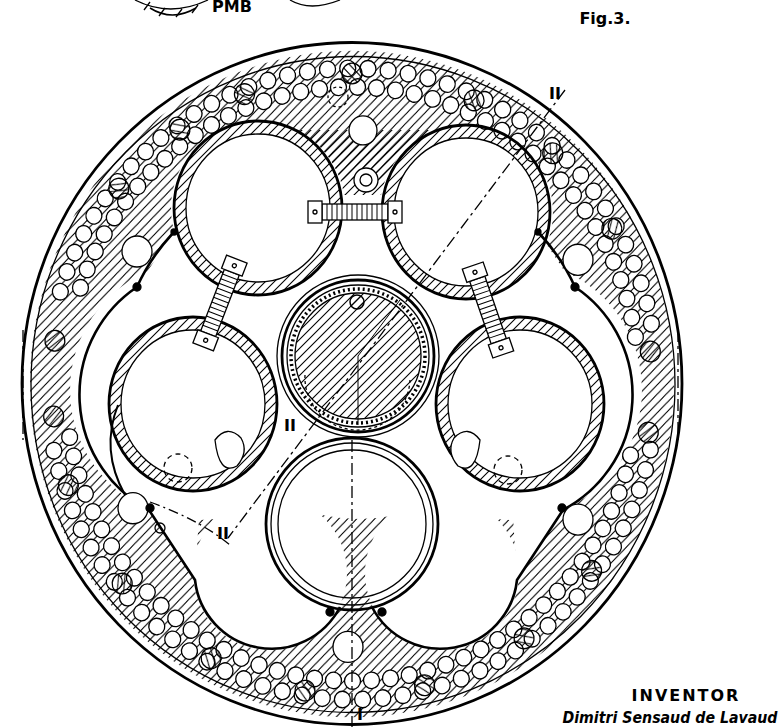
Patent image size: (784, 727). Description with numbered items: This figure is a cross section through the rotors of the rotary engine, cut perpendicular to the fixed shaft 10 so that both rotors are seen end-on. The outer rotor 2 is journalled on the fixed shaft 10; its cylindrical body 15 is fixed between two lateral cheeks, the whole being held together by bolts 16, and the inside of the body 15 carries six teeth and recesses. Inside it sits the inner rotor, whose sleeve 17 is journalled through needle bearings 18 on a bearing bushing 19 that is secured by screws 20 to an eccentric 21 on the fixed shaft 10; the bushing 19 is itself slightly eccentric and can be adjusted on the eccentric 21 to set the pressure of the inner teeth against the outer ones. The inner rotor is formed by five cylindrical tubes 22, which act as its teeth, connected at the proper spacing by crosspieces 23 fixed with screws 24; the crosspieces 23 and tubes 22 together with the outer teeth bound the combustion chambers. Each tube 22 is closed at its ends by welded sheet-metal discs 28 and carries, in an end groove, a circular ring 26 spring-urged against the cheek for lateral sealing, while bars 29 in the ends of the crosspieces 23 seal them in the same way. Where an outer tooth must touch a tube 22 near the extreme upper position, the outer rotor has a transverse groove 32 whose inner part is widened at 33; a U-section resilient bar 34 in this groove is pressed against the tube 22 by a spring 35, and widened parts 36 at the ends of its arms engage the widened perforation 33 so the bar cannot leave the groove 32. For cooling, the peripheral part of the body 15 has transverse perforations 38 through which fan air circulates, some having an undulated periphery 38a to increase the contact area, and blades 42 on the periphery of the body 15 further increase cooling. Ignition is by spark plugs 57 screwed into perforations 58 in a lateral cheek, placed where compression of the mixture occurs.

The outer rotor 2 is at (172, 14).
The fixed shaft 10 is at (452, 390).
The cylindrical body 15 is at (212, 105).
The bolts 16 is at (177, 125).
The sleeve 17 is at (398, 288).
The needle bearings 18 is at (368, 428).
The bearing bushing 19 is at (405, 242).
The screws 20 is at (371, 345).
The eccentric 21 is at (415, 340).
The cylindrical tubes 22 is at (185, 172).
The crosspieces 23 is at (340, 216).
The screws 24 is at (245, 250).
The circular segment or ring 26 is at (352, 514).
The discs 28 is at (240, 452).
The bars 29 is at (290, 515).
The transverse groove 32 is at (117, 420).
The widened perforation 33 is at (172, 458).
The resilient bar 34 is at (135, 292).
The spring 35 is at (160, 505).
The widened parts 36 is at (165, 533).
The transverse perforations 38 is at (172, 155).
The undulated periphery 38a is at (345, 90).
The blades 42 is at (70, 215).
The spark plugs 57 is at (355, 183).
The perforations 58 is at (378, 180).